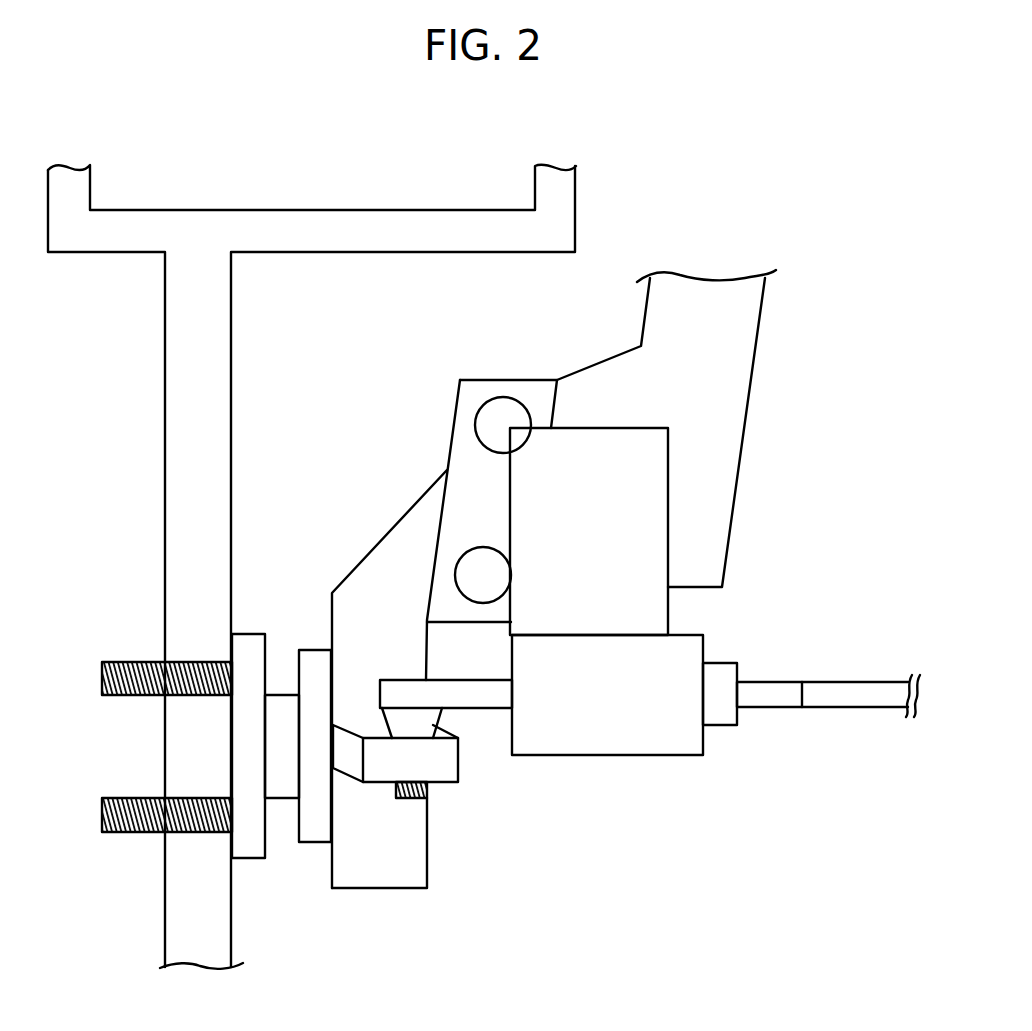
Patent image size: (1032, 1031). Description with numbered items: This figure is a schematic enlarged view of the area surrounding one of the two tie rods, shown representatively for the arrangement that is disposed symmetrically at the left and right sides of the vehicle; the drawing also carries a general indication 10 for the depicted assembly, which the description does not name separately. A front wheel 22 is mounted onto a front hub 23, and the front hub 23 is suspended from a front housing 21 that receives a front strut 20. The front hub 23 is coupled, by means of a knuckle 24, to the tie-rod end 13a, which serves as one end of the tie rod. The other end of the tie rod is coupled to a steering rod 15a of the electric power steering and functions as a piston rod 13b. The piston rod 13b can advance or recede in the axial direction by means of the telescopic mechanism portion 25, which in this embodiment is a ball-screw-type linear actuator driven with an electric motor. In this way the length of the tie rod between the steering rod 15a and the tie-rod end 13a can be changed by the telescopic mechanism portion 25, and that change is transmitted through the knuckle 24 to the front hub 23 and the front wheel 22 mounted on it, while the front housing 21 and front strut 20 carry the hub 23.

The drive unit 10 is at (776, 649).
The tie-rod end 13a is at (481, 708).
The piston rod 13b is at (772, 708).
The steering rod 15a is at (858, 708).
The front strut 20 is at (752, 375).
The front housing 21 is at (377, 889).
The front wheel 22 is at (165, 436).
The front hub 23 is at (282, 695).
The knuckle 24 is at (443, 782).
The telescopic mechanism portion 25 is at (622, 771).